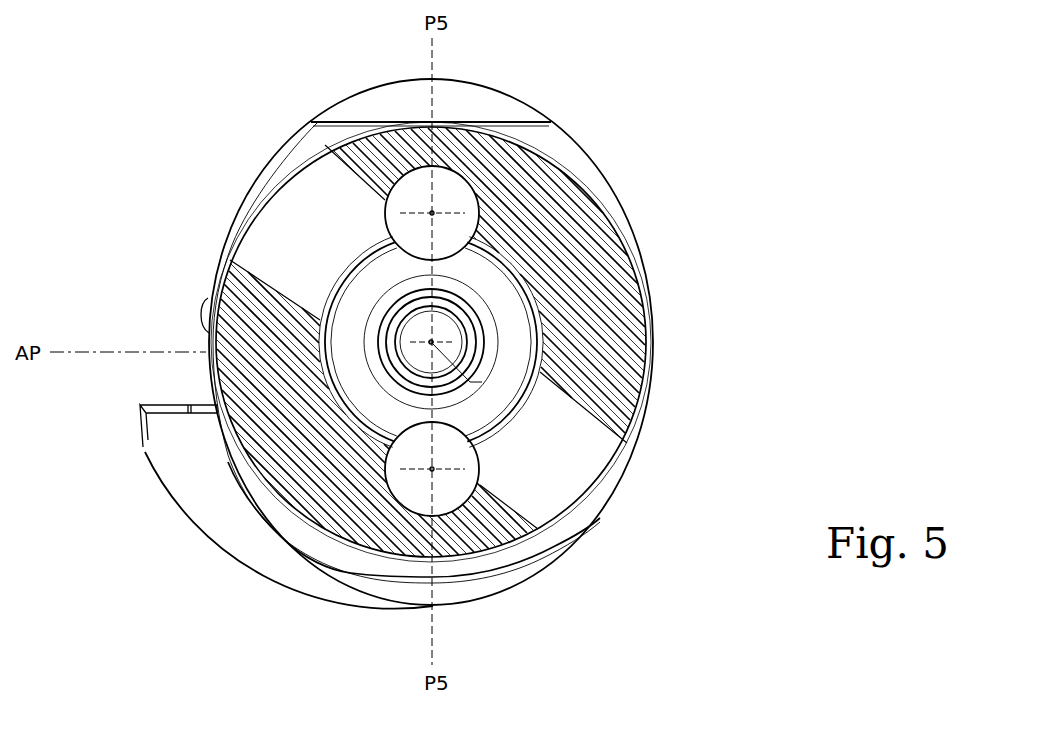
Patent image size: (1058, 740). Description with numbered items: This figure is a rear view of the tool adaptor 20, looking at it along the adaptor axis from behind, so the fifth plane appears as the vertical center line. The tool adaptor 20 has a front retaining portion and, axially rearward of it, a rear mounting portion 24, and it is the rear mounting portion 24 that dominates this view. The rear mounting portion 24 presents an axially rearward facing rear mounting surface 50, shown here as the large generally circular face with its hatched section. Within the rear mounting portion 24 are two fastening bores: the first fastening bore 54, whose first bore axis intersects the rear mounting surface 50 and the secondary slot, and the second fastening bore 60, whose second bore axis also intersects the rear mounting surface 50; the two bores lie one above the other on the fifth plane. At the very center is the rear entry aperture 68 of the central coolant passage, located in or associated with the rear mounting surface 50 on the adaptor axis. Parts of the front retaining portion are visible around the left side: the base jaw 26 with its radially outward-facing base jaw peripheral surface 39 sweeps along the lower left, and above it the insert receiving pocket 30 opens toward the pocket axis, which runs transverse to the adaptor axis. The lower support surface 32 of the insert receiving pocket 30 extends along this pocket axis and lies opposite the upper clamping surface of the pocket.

The tool adaptor 20 is at (642, 166).
The rear mounting portion 24 is at (356, 121).
The base jaw 26 is at (223, 512).
The insert receiving pocket 30 is at (178, 373).
The lower support surface 32 is at (158, 402).
The base jaw peripheral surface 39 is at (181, 513).
The rear mounting surface 50 is at (578, 450).
The first fastening bore 54 is at (455, 192).
The second fastening bore 60 is at (453, 485).
The rear entry aperture 68 is at (447, 326).